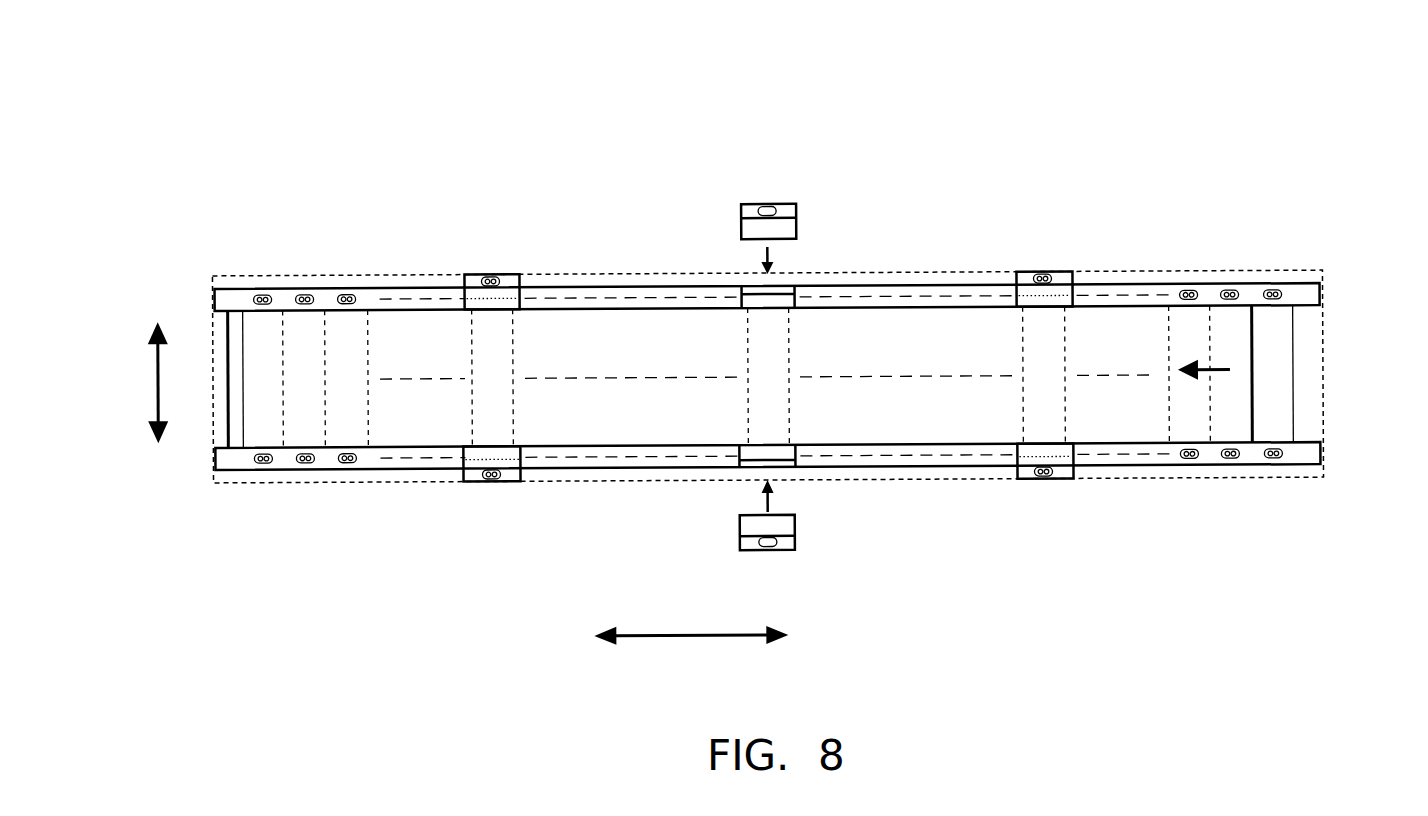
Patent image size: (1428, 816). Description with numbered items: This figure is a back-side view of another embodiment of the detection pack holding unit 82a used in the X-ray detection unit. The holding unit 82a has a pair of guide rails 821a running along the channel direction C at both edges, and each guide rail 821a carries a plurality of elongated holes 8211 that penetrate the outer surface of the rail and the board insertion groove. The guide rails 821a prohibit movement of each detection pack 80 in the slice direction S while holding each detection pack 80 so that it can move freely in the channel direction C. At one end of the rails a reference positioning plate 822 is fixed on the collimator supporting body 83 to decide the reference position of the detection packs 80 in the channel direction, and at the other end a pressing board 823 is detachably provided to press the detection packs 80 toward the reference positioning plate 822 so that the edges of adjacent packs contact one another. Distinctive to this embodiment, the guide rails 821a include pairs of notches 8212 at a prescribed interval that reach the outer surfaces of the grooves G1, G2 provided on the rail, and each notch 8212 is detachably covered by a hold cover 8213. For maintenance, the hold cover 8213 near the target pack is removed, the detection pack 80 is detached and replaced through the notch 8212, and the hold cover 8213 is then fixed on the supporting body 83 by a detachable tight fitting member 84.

The detection pack holding unit 82a is at (668, 61).
The collimator supporting body 83 is at (410, 497).
The guide rail 821a is at (897, 283).
The reference positioning plate 822 is at (236, 320).
The pressing board 823 is at (1275, 331).
The elongated hole 8211 is at (257, 458).
The detachable tight fitting member 84 is at (263, 459).
The notch 8212 is at (746, 309).
The hold cover 8213 is at (486, 273).
The detection pack 80 is at (478, 331).
The groove G1 is at (784, 300).
The groove G2 is at (781, 454).
The slice direction S is at (142, 382).
The channel direction C is at (691, 654).